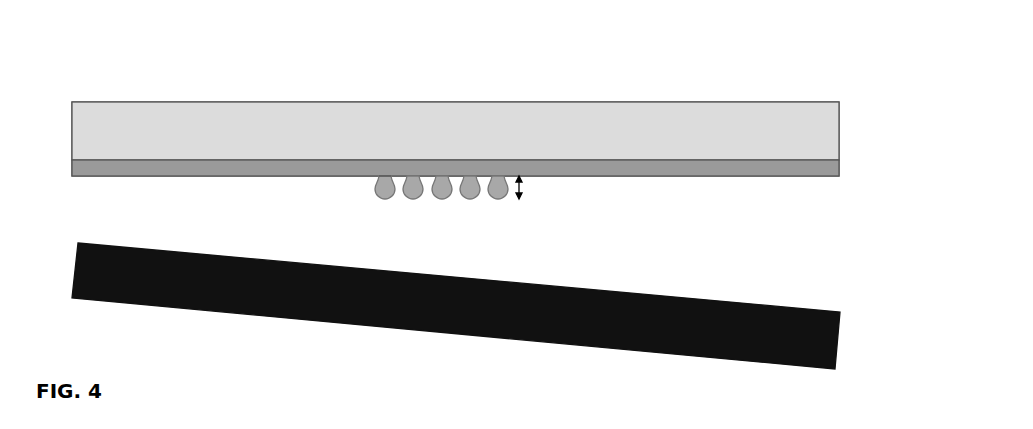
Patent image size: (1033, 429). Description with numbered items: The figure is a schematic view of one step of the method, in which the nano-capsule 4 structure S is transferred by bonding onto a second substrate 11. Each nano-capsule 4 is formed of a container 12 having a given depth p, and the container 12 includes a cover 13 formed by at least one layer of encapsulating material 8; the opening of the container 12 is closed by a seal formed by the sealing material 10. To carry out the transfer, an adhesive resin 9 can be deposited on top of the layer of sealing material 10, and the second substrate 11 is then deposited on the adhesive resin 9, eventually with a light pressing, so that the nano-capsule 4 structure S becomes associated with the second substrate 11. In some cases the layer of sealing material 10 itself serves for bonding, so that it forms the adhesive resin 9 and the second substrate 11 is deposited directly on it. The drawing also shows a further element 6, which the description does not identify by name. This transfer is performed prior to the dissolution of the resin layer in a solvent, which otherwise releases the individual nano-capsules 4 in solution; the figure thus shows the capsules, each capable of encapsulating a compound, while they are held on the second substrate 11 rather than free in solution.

The nano-capsule 4 is at (443, 185).
The substrate 6 is at (742, 306).
The encapsulating material 8 is at (100, 166).
The adhesive resin 9 is at (249, 159).
The sealing material 10 is at (386, 174).
The second substrate 11 is at (677, 124).
The container 12 is at (381, 189).
The cover 13 is at (476, 196).
The nano-capsule structure S is at (488, 198).
The depth p is at (527, 189).